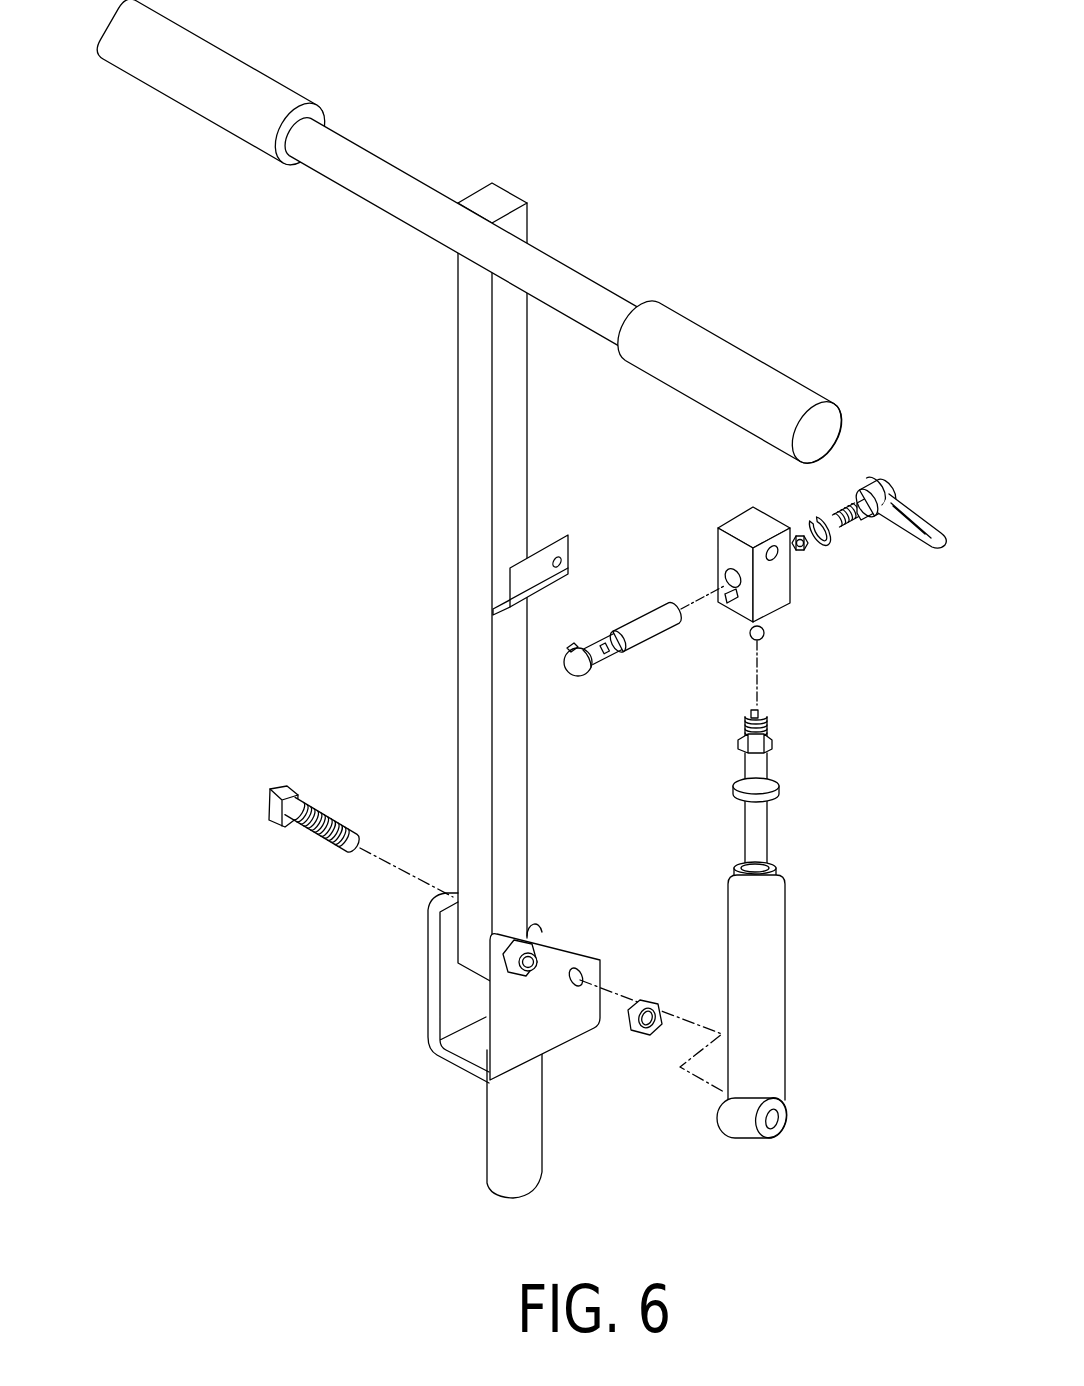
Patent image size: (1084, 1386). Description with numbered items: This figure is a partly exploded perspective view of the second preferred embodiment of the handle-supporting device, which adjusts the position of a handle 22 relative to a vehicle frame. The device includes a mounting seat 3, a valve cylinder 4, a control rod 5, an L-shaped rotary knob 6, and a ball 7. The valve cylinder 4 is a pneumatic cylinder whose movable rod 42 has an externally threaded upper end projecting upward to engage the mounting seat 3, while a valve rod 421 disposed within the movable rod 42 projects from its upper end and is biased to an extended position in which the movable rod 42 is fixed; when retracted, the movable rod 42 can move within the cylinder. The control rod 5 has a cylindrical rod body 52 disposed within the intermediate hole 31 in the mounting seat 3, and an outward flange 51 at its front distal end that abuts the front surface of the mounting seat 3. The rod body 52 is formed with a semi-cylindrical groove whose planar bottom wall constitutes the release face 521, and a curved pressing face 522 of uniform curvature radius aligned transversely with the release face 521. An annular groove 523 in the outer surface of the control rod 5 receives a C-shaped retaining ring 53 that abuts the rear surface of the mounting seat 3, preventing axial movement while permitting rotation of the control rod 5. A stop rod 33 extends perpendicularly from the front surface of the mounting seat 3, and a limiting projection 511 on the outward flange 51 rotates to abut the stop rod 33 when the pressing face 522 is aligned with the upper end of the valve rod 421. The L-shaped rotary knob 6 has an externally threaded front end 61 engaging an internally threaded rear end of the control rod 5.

The handle 22 is at (470, 360).
The mounting seat 3 is at (722, 551).
The intermediate hole 31 is at (727, 578).
The stop rod 33 is at (738, 606).
The control rod 5 is at (631, 627).
The outward flange 51 is at (563, 670).
The limiting projection 511 is at (570, 647).
The rod body 52 is at (668, 686).
The release face 521 is at (606, 657).
The pressing face 522 is at (618, 654).
The annular groove 523 is at (626, 651).
The C-shaped retaining ring 53 is at (829, 544).
The L-shaped rotary knob 6 is at (884, 489).
The externally threaded front end 61 is at (841, 507).
The ball 7 is at (765, 633).
The valve cylinder 4 is at (792, 909).
The movable rod 42 is at (757, 822).
The valve rod 421 is at (767, 712).